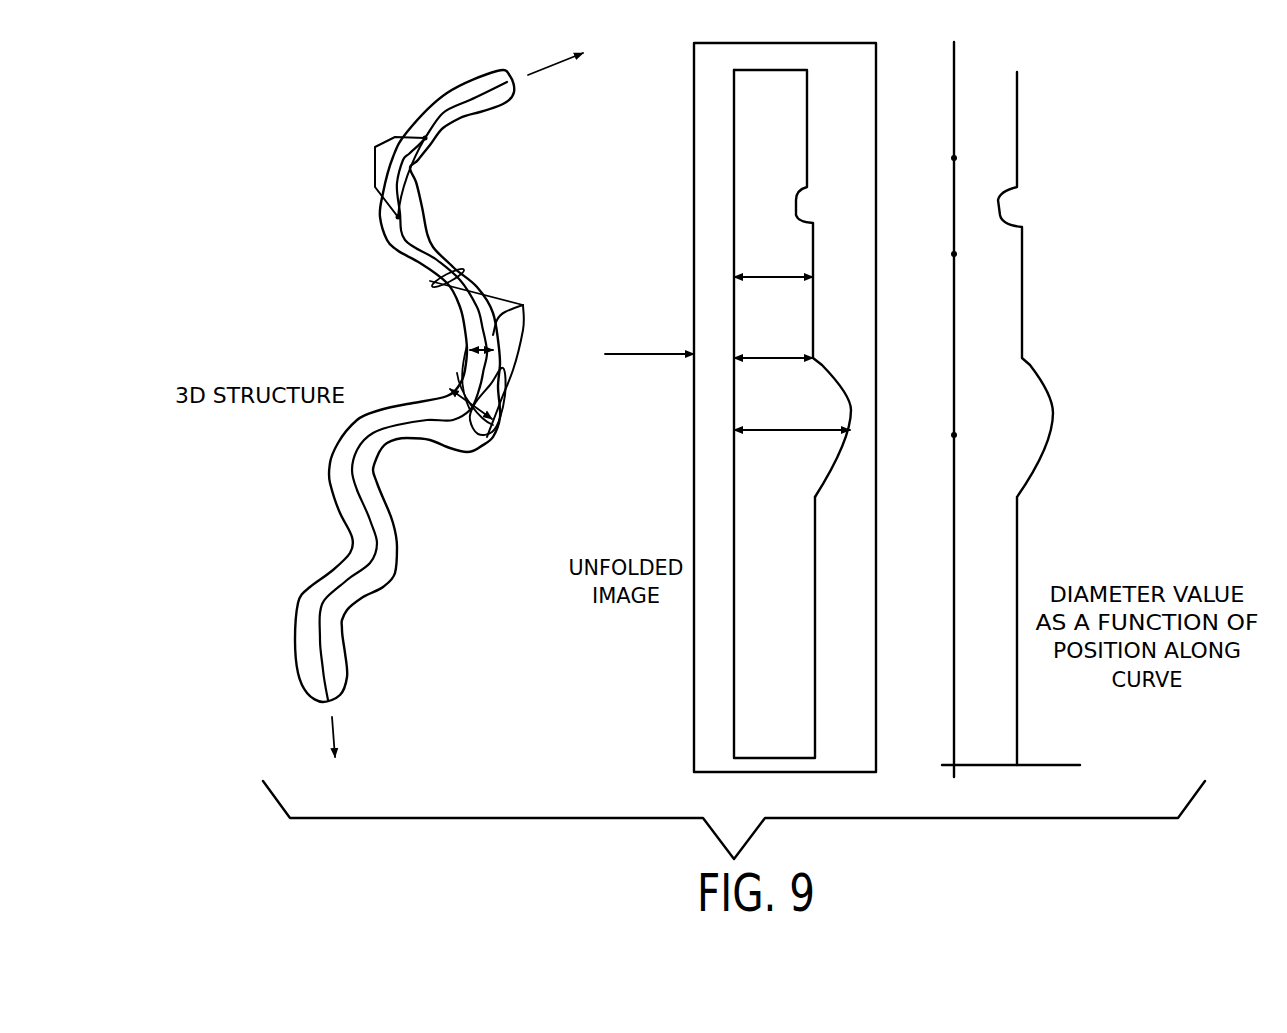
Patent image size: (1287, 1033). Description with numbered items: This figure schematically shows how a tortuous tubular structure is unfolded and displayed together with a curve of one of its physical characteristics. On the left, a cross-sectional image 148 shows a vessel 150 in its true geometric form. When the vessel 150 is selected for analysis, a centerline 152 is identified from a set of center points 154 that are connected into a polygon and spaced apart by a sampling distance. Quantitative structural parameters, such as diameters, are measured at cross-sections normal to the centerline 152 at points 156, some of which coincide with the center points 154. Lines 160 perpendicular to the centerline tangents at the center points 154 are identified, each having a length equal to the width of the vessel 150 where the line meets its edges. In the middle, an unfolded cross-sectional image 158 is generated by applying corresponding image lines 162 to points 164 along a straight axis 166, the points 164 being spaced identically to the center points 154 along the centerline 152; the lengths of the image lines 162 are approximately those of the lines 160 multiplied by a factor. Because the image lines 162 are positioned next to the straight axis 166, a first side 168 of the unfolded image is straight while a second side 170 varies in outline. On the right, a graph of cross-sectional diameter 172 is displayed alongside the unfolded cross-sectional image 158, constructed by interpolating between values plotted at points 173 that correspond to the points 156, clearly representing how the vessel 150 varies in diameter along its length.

The cross-sectional image 148 is at (484, 232).
The vessel 150 is at (452, 92).
The centerline 152 is at (474, 98).
The center points 154 is at (430, 281).
The points 156 is at (512, 440).
The unfolded cross-sectional image 158 is at (692, 278).
The lines 160 is at (525, 364).
The image lines 162 is at (763, 273).
The points 164 is at (732, 277).
The straight axis 166 is at (694, 162).
The first side 168 is at (734, 127).
The second side 170 is at (809, 140).
The graph of cross-sectional diameter 172 is at (1022, 262).
The points 173 is at (954, 158).